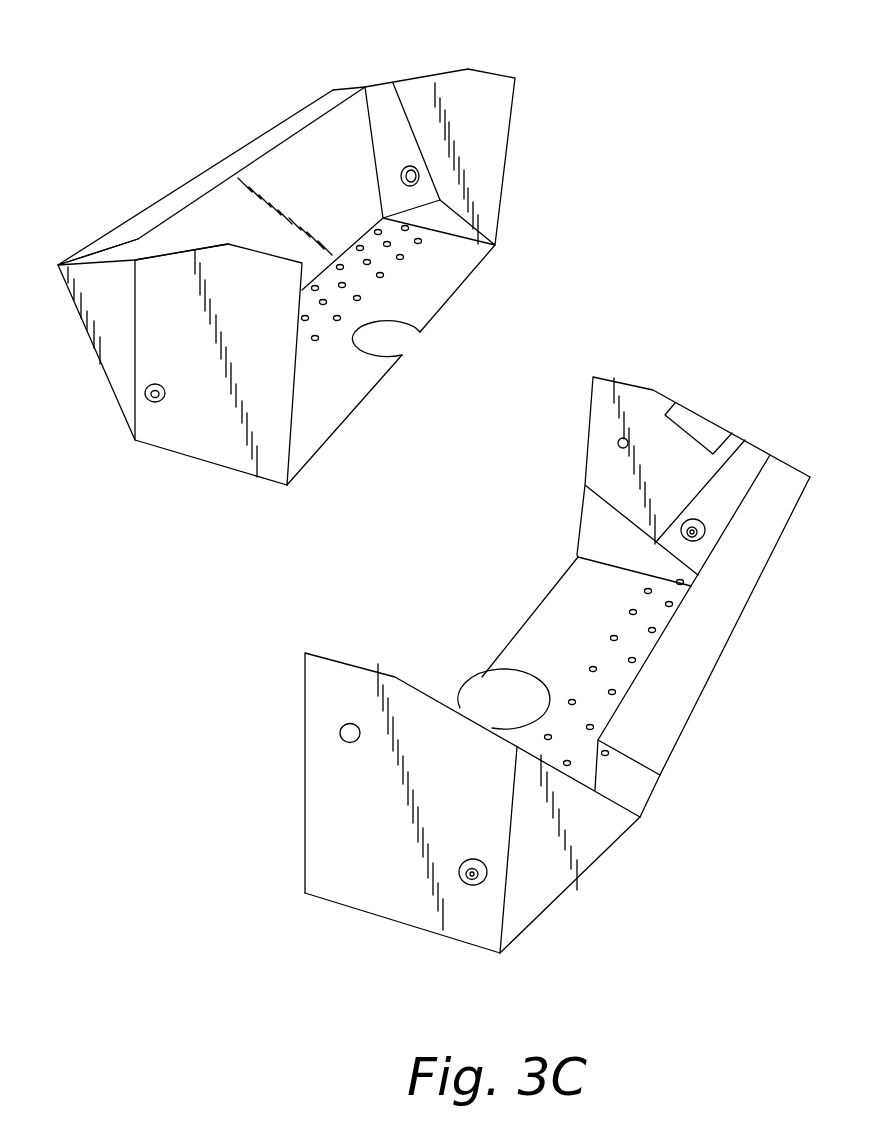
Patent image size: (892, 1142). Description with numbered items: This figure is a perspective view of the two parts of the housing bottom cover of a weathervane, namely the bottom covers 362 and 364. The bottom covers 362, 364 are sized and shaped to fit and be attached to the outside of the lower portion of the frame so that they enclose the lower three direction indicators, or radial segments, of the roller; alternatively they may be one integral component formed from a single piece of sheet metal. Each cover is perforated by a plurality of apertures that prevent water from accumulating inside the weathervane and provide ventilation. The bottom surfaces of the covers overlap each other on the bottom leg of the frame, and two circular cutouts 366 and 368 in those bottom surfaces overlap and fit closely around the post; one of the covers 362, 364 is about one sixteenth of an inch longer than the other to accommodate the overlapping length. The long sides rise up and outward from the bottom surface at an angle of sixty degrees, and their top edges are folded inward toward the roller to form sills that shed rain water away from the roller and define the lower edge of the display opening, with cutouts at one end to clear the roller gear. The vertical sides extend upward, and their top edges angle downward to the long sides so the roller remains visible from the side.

The bottom cover 362 is at (525, 121).
The bottom cover 364 is at (697, 399).
The circular cutout 366 is at (380, 337).
The circular cutout 368 is at (502, 706).